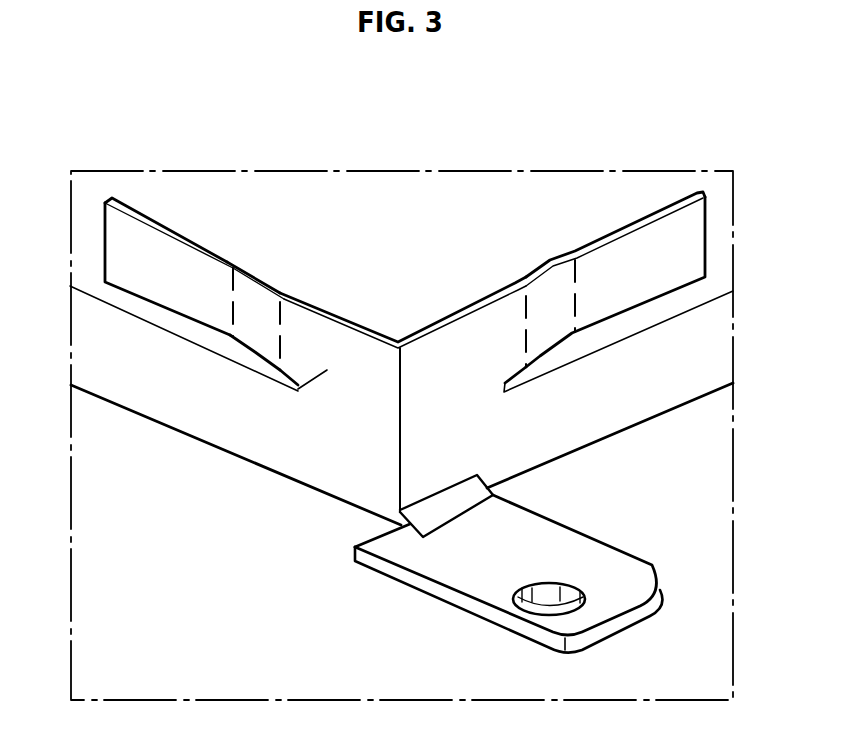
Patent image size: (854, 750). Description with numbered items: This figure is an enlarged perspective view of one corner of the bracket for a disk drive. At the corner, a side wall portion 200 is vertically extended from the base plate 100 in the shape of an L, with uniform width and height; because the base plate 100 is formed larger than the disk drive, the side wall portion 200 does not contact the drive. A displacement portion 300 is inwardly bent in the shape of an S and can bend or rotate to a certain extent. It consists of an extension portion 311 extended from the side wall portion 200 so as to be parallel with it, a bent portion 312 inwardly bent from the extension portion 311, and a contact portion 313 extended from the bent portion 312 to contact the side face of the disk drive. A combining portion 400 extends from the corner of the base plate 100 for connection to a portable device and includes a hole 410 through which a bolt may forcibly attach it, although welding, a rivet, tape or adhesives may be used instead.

The base plate 100 is at (423, 268).
The side wall portion 200 is at (452, 370).
The displacement portion 300 is at (405, 238).
The extension portion 311 is at (287, 316).
The bent portion 312 is at (259, 298).
The contact portion 313 is at (206, 278).
The combining portion 400 is at (588, 568).
The hole 410 is at (545, 601).